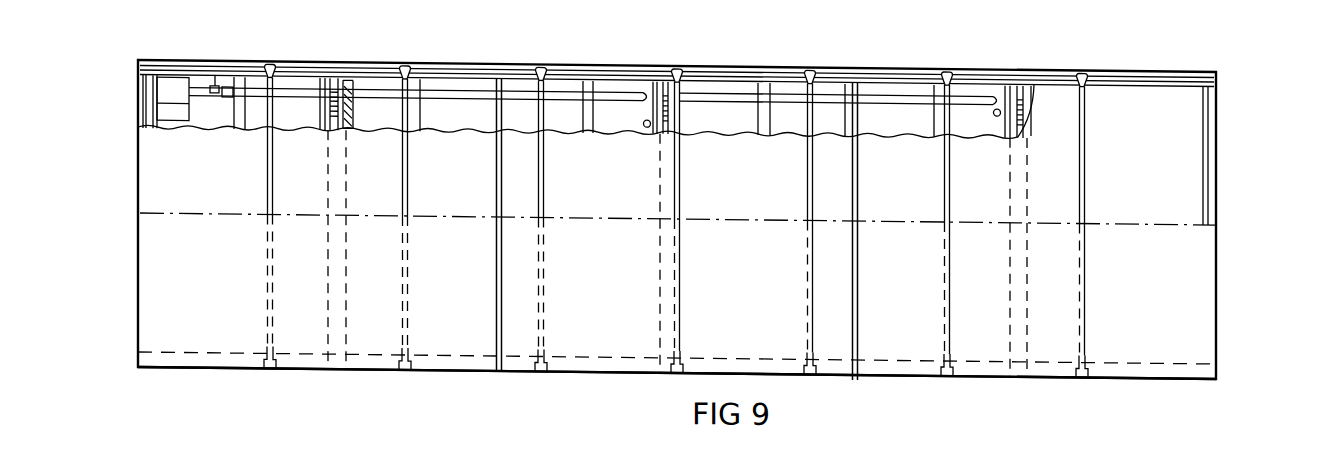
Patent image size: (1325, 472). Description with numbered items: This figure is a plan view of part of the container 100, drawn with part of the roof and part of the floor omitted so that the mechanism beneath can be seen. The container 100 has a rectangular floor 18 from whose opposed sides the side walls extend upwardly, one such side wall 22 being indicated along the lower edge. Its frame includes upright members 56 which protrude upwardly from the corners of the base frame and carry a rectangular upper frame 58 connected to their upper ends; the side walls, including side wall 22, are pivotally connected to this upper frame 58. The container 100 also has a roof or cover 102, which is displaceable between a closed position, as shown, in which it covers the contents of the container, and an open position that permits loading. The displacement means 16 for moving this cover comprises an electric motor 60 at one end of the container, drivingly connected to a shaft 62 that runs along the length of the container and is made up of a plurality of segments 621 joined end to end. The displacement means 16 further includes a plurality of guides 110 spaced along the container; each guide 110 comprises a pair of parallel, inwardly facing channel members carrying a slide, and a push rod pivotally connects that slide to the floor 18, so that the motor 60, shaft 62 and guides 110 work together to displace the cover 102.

The container 100 is at (1300, 42).
The displacement means 16 is at (582, 66).
The floor 18 is at (478, 204).
The side wall 22 is at (233, 364).
The upright member 56 is at (139, 61).
The upper frame 58 is at (1160, 386).
The electric motor 60 is at (176, 93).
The shaft 62 is at (835, 66).
The shaft segment 621 is at (303, 96).
The roof or cover 102 is at (636, 310).
The guide 110 is at (641, 124).